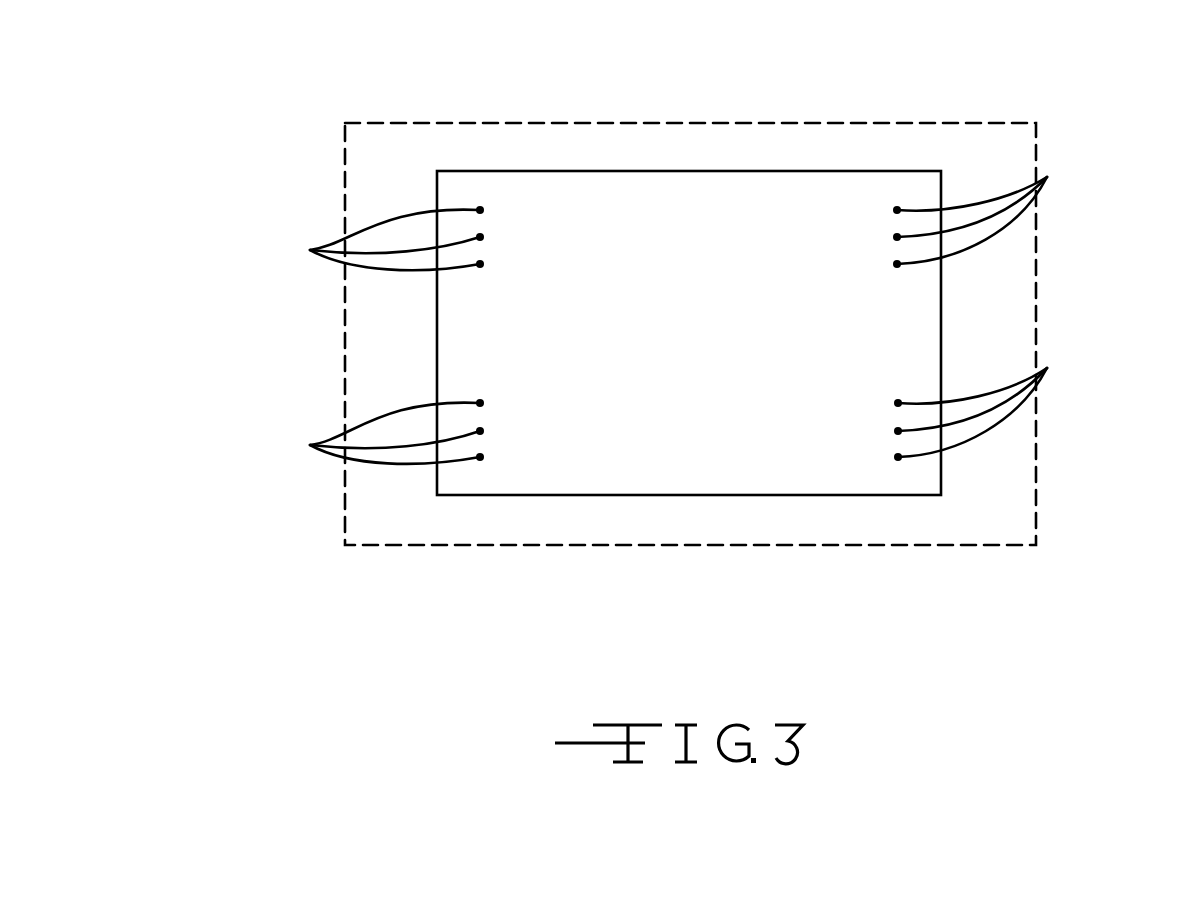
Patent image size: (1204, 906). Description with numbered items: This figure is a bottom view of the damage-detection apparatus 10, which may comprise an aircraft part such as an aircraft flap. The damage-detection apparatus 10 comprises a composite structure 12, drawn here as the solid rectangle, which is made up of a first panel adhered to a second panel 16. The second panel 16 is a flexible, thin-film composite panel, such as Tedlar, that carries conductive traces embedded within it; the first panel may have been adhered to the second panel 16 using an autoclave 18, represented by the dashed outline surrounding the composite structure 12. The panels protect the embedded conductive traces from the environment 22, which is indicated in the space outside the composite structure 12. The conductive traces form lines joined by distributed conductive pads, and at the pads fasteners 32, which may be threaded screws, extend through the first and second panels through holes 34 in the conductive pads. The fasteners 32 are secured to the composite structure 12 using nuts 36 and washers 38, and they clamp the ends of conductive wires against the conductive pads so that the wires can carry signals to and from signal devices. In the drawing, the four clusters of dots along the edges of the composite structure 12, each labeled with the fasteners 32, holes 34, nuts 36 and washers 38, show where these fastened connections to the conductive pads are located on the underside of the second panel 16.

The damage-detection apparatus 10 is at (813, 137).
The composite structure 12 is at (636, 170).
The second panel 16 is at (883, 315).
The autoclave 18 is at (988, 123).
The environment 22 is at (988, 333).
The fasteners 32 is at (320, 238).
The holes 34 is at (1042, 207).
The nuts 36 is at (320, 431).
The washers 38 is at (1043, 403).